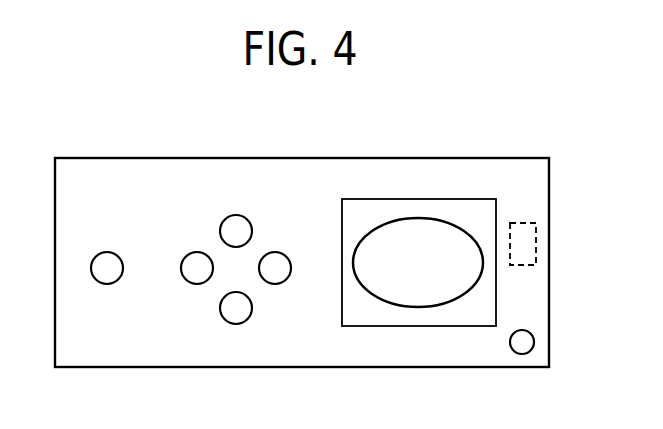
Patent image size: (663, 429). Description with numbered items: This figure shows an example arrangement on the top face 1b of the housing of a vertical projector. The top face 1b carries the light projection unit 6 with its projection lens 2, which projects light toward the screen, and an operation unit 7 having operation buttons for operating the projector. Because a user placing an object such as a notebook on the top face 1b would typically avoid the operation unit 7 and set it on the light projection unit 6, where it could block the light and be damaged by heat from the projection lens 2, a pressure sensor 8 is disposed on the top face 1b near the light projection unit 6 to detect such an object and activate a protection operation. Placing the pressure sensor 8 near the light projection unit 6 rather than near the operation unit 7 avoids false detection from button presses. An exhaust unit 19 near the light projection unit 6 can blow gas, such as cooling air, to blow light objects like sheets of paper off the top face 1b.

The top face 1b is at (465, 165).
The operation unit 7 is at (293, 213).
The light projection unit 6 is at (340, 310).
The projection lens 2 is at (481, 280).
The pressure sensor 8 is at (513, 224).
The exhaust unit 19 is at (534, 341).